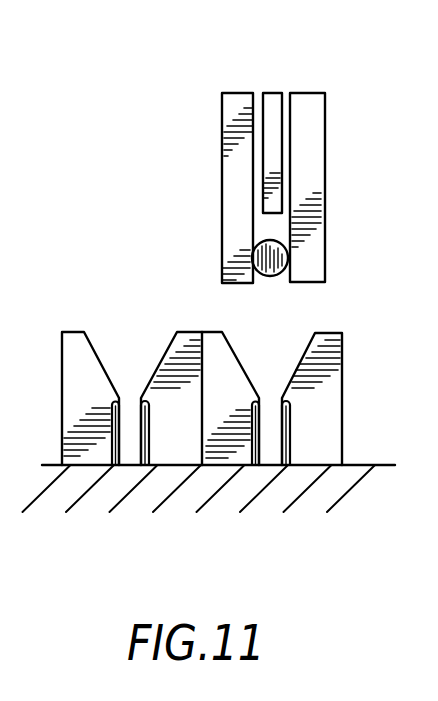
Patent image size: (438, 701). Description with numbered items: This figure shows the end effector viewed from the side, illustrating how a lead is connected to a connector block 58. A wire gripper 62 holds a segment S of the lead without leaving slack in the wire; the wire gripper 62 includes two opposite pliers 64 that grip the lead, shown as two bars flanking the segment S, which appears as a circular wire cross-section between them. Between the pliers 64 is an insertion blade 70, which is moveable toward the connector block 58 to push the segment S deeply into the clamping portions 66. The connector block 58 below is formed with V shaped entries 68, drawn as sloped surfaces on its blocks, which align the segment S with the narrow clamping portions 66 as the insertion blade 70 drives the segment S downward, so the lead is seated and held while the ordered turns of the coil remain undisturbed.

The connector block 58 is at (357, 381).
The wire gripper 62 is at (334, 118).
The pliers 64 is at (231, 172).
The clamping portions 66 is at (290, 440).
The V shaped entries 68 is at (100, 352).
The insertion blade 70 is at (275, 113).
The segment S is at (275, 277).